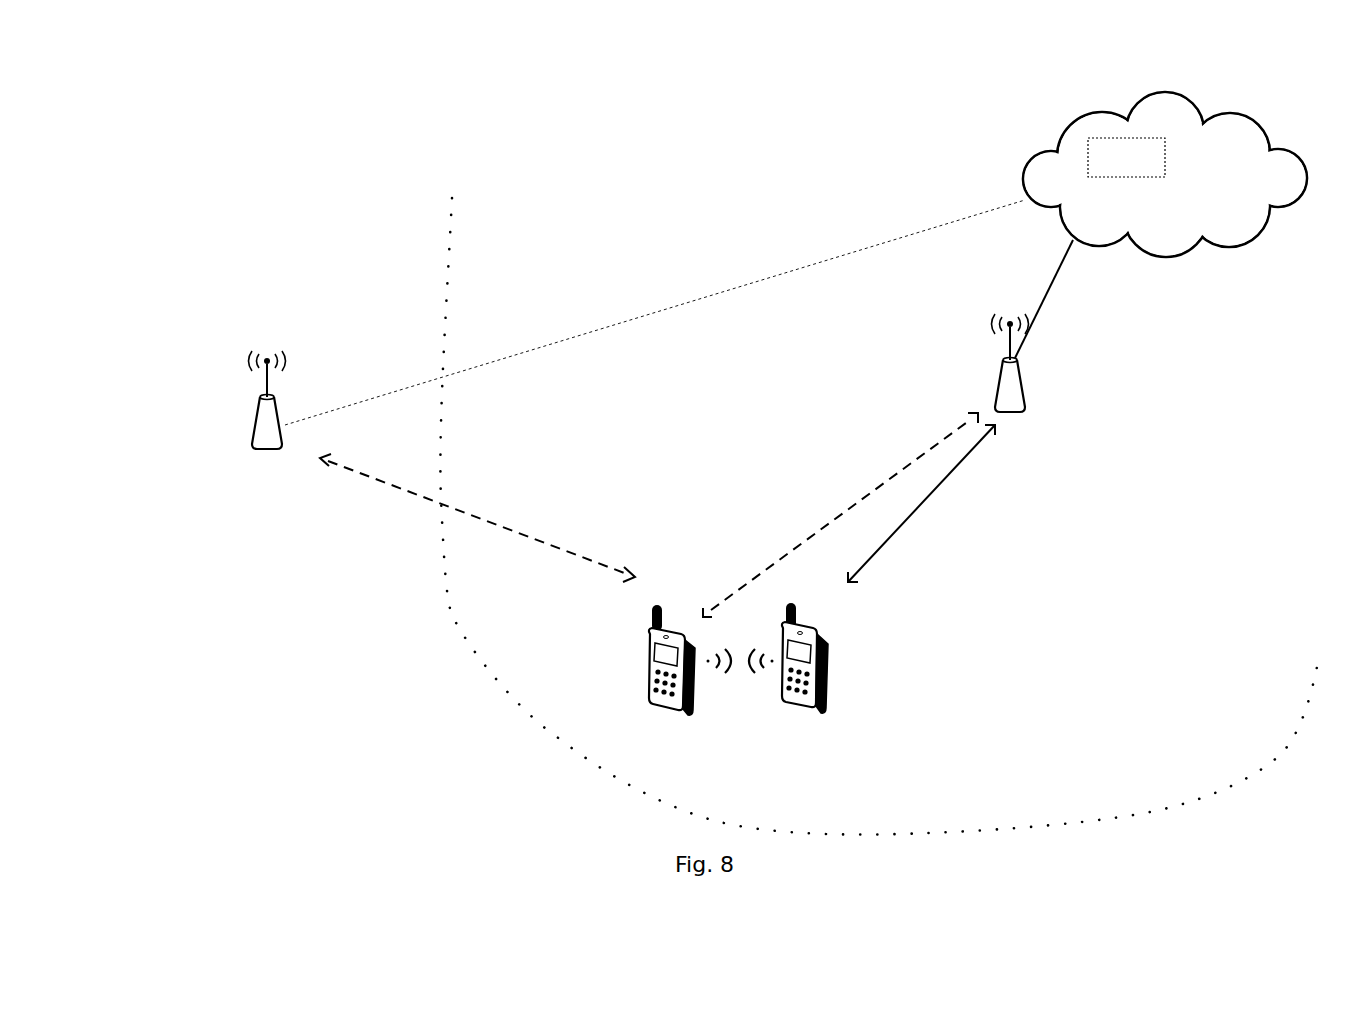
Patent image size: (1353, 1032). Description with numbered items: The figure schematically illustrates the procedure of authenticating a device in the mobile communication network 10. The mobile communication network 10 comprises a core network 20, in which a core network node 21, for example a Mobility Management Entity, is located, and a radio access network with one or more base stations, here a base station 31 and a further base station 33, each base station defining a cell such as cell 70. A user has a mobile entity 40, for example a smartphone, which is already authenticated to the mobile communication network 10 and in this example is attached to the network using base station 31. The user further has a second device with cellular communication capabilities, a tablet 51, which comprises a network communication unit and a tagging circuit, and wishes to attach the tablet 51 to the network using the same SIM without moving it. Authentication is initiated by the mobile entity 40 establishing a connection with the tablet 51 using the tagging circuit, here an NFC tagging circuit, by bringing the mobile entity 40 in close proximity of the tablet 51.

The mobile communication network 10 is at (921, 162).
The core network 20 is at (1060, 131).
The core network node 21 is at (1126, 157).
The base station 31 is at (1025, 388).
The second base station 33 is at (256, 418).
The mobile entity 40 is at (828, 661).
The tablet 51 is at (648, 660).
The cell 70 is at (547, 732).